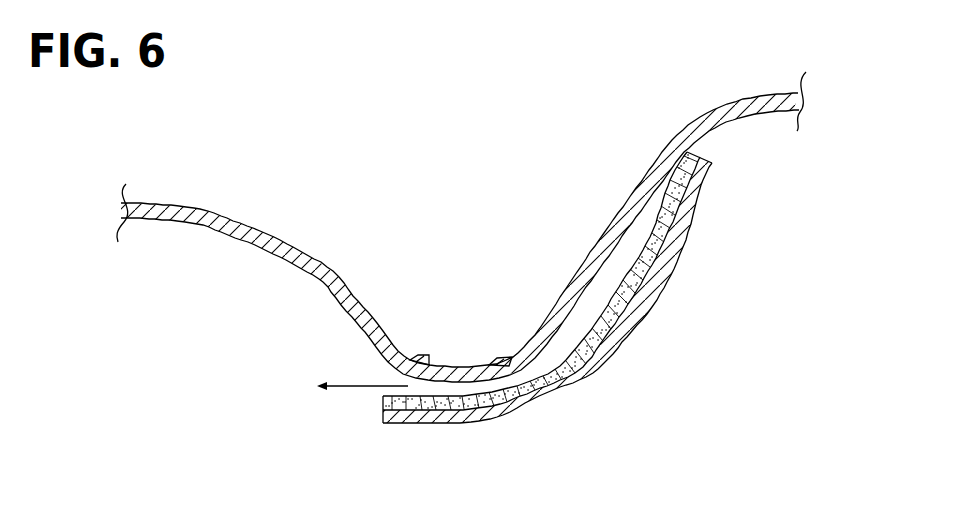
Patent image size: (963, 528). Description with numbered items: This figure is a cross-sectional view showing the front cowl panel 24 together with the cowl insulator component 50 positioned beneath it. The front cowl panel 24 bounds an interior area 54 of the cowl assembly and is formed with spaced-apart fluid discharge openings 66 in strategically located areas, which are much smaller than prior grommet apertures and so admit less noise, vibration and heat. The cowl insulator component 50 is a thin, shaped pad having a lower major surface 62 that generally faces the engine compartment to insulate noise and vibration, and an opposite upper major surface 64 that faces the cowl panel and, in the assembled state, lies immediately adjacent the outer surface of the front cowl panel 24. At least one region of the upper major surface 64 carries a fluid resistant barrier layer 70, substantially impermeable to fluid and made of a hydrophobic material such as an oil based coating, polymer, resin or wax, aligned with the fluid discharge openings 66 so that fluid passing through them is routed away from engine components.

The front cowl panel 24 is at (295, 235).
The cowl insulator component 50 is at (579, 321).
The interior area 54 is at (470, 278).
The lower major surface 62 is at (598, 366).
The upper major surface 64 is at (484, 414).
The fluid discharge openings 66 is at (428, 356).
The fluid resistant barrier layer 70 is at (421, 411).